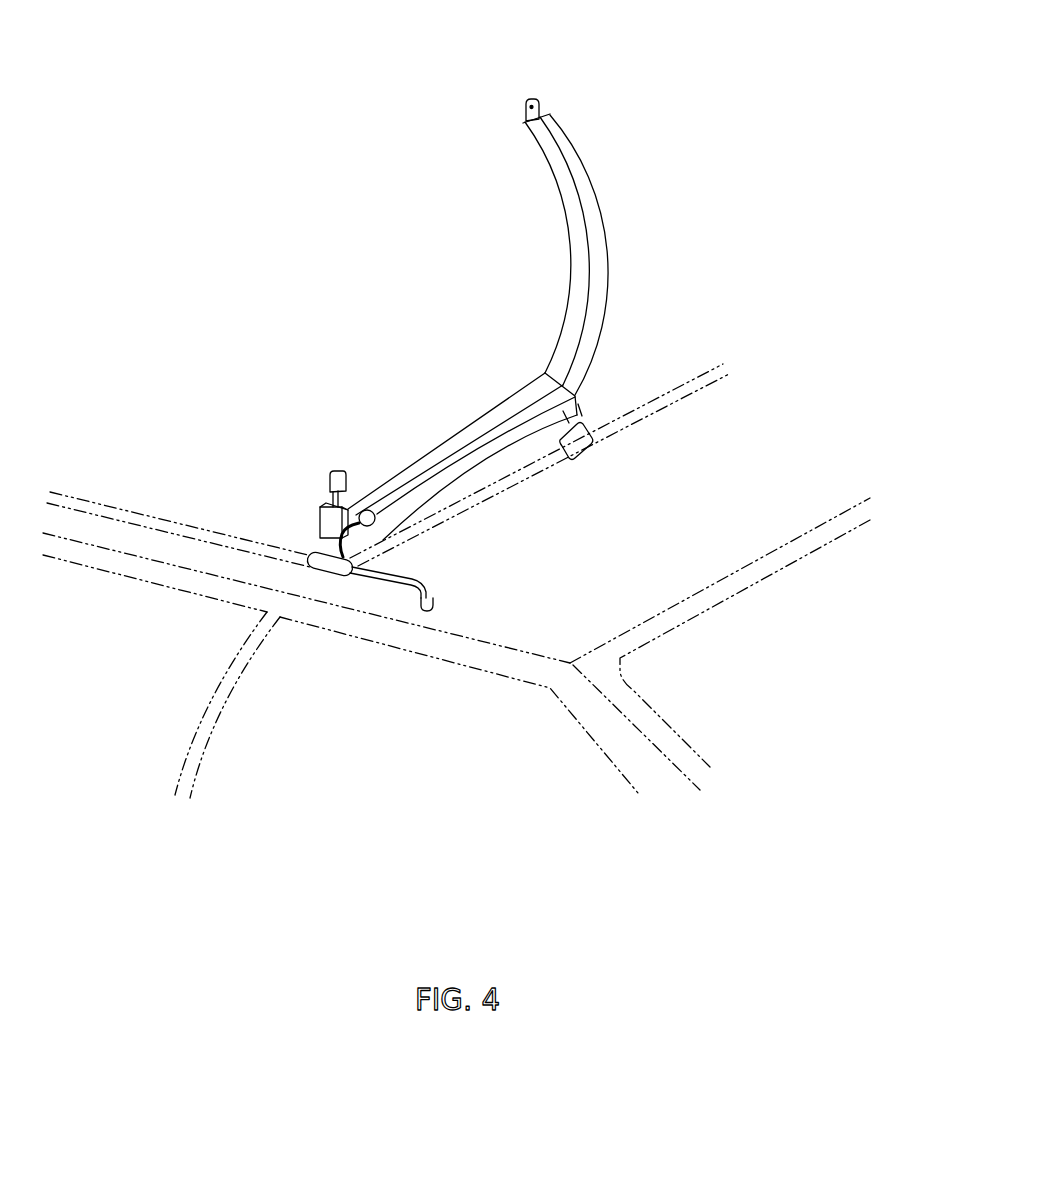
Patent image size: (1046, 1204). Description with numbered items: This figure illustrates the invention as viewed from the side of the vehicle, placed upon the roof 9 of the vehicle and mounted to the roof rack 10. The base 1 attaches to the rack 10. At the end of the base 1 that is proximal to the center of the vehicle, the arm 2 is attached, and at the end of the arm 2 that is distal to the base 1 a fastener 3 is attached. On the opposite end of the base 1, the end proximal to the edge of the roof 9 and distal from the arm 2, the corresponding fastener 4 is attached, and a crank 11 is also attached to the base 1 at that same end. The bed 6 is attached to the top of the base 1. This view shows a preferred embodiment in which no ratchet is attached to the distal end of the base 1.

The base 1 is at (578, 399).
The arm 2 is at (600, 207).
The fastener 3 is at (530, 98).
The corresponding fastener 4 is at (330, 472).
The bed 6 is at (447, 438).
The roof 9 is at (512, 657).
The roof rack 10 is at (422, 580).
The crank 11 is at (368, 510).